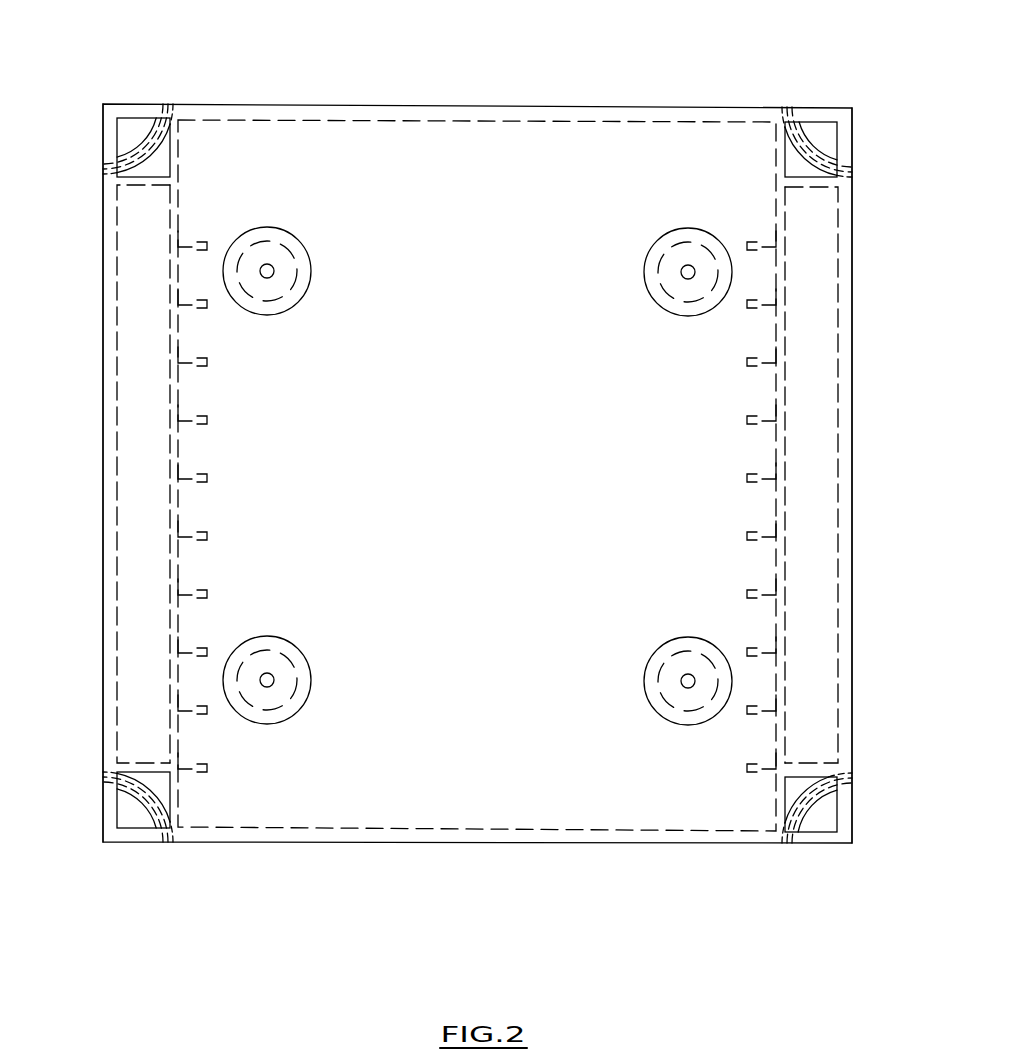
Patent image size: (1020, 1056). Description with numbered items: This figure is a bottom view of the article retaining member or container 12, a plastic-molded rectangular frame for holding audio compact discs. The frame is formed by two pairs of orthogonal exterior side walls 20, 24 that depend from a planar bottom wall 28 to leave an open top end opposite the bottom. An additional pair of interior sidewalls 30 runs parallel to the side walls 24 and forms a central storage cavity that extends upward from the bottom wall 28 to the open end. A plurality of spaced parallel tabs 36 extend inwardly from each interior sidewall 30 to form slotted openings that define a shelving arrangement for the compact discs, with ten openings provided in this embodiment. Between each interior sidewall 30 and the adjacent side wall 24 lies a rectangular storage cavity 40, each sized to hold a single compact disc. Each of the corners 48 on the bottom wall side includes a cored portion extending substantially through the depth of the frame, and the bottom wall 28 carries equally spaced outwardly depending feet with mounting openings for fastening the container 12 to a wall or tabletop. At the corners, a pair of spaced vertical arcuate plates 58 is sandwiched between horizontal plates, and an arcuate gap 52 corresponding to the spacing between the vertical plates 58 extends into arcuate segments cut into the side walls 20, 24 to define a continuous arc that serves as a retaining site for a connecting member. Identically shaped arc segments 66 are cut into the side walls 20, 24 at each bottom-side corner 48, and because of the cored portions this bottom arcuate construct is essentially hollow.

The article retaining member 12 is at (161, 50).
The side walls 20 is at (600, 107).
The side walls 24 is at (855, 457).
The bottom wall 28 is at (398, 153).
The interior sidewalls 30 is at (170, 558).
The tabs 36 is at (195, 412).
The storage cavities 40 is at (820, 305).
The corners 48 is at (123, 120).
The arcuate gap 52 is at (124, 162).
The vertical arcuate plates 58 is at (820, 155).
The arc segments 66 is at (162, 143).